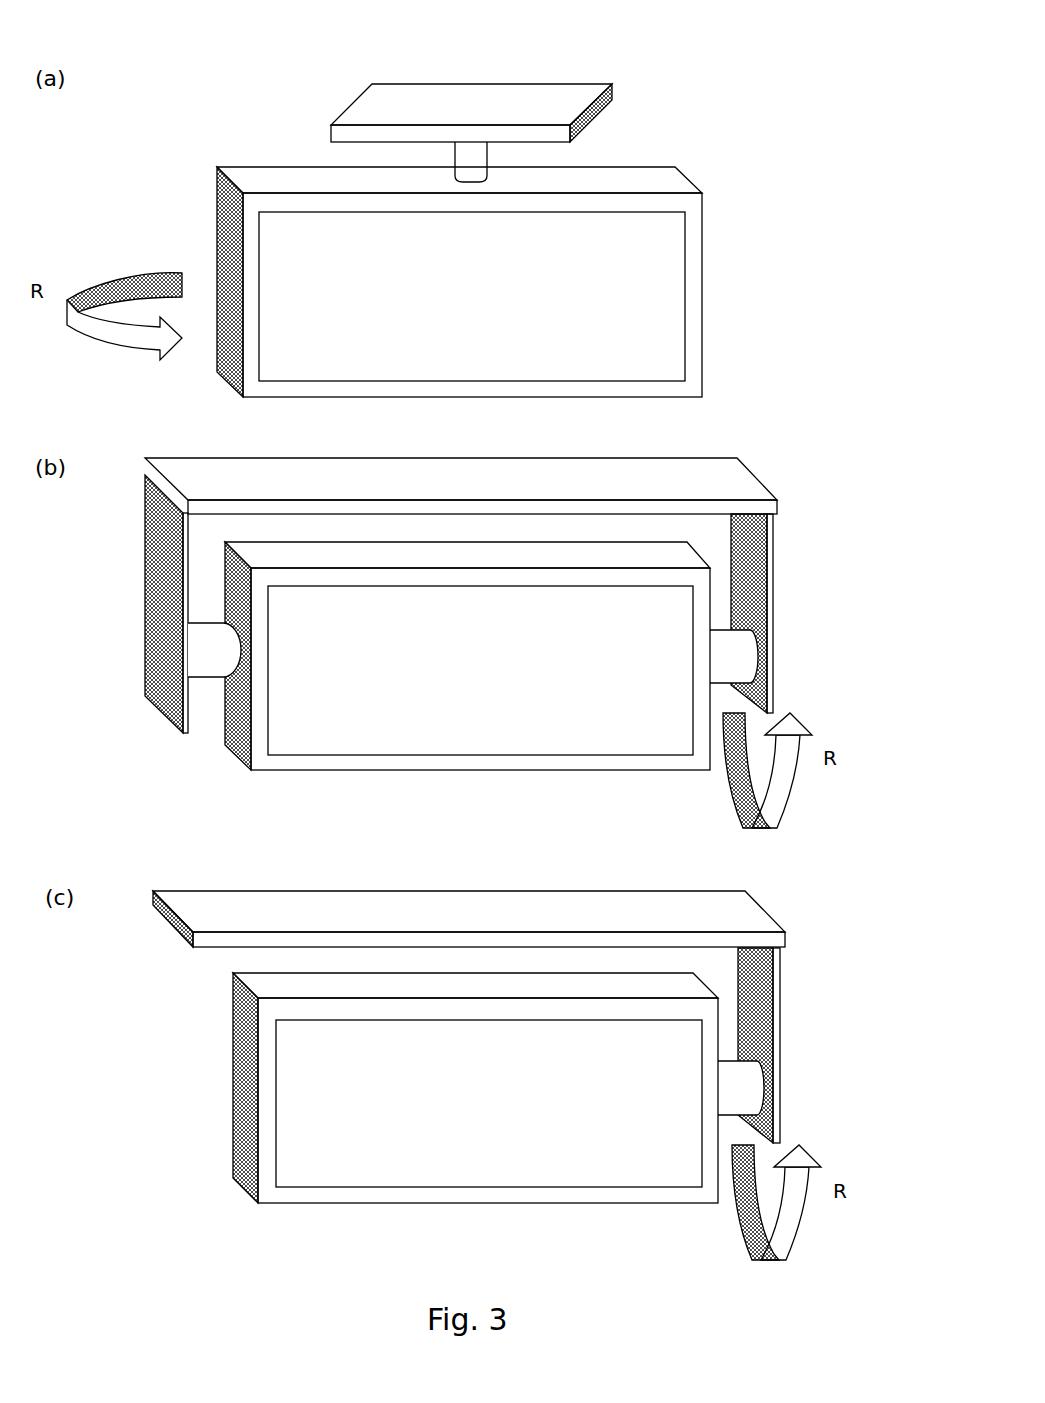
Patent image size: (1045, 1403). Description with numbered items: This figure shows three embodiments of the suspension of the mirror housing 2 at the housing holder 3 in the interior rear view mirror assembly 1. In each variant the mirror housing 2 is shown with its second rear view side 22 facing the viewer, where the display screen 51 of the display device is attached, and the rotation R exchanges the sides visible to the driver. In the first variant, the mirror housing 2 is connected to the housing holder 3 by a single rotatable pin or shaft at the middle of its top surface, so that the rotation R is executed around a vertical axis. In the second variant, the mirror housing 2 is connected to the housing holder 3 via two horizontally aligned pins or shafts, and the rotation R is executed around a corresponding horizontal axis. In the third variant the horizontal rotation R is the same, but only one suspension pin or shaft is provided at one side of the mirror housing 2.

The interior rear view mirror assembly 1 is at (497, 608).
The mirror housing 2 is at (452, 664).
The housing holder 3 is at (354, 71).
The second rear view side 22 is at (706, 297).
The display screen 51 is at (476, 305).